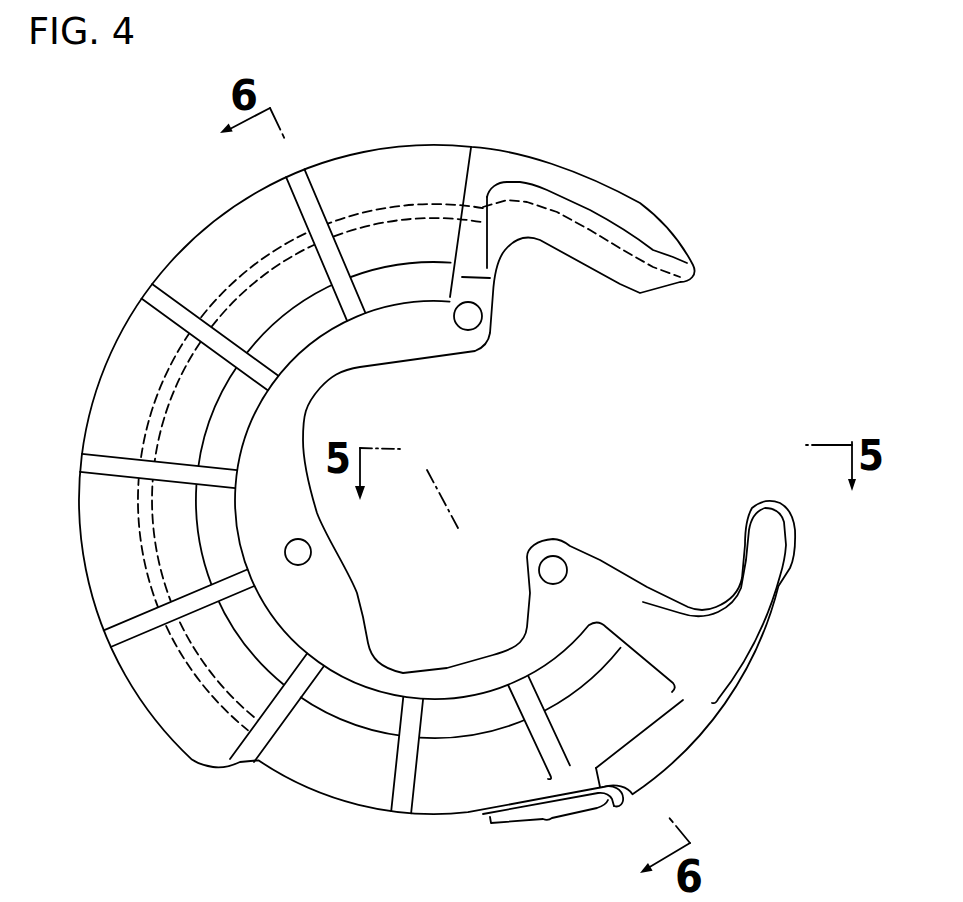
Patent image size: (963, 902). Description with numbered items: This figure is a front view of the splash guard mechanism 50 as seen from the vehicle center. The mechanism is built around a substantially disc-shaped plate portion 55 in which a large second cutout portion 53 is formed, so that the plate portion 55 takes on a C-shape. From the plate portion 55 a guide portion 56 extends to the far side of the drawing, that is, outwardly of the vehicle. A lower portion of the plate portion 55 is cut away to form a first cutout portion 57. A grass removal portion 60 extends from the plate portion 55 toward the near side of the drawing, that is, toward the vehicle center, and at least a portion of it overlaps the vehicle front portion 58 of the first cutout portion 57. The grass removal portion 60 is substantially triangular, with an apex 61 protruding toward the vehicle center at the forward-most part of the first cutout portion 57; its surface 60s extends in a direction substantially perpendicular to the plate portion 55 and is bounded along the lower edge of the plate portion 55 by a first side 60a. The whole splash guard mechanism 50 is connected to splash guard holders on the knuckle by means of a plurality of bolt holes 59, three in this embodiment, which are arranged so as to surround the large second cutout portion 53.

The splash guard mechanism 50 is at (716, 183).
The second cutout portion 53 is at (623, 570).
The plate portion 55 is at (378, 152).
The guide portion 56 is at (427, 203).
The first cutout portion 57 is at (340, 802).
The vehicle front portion 58 is at (549, 821).
The bolt holes 59 is at (472, 325).
The grass removal portion 60 is at (640, 757).
The first side 60a is at (550, 785).
The surface 60s is at (592, 782).
The apex 61 is at (617, 803).